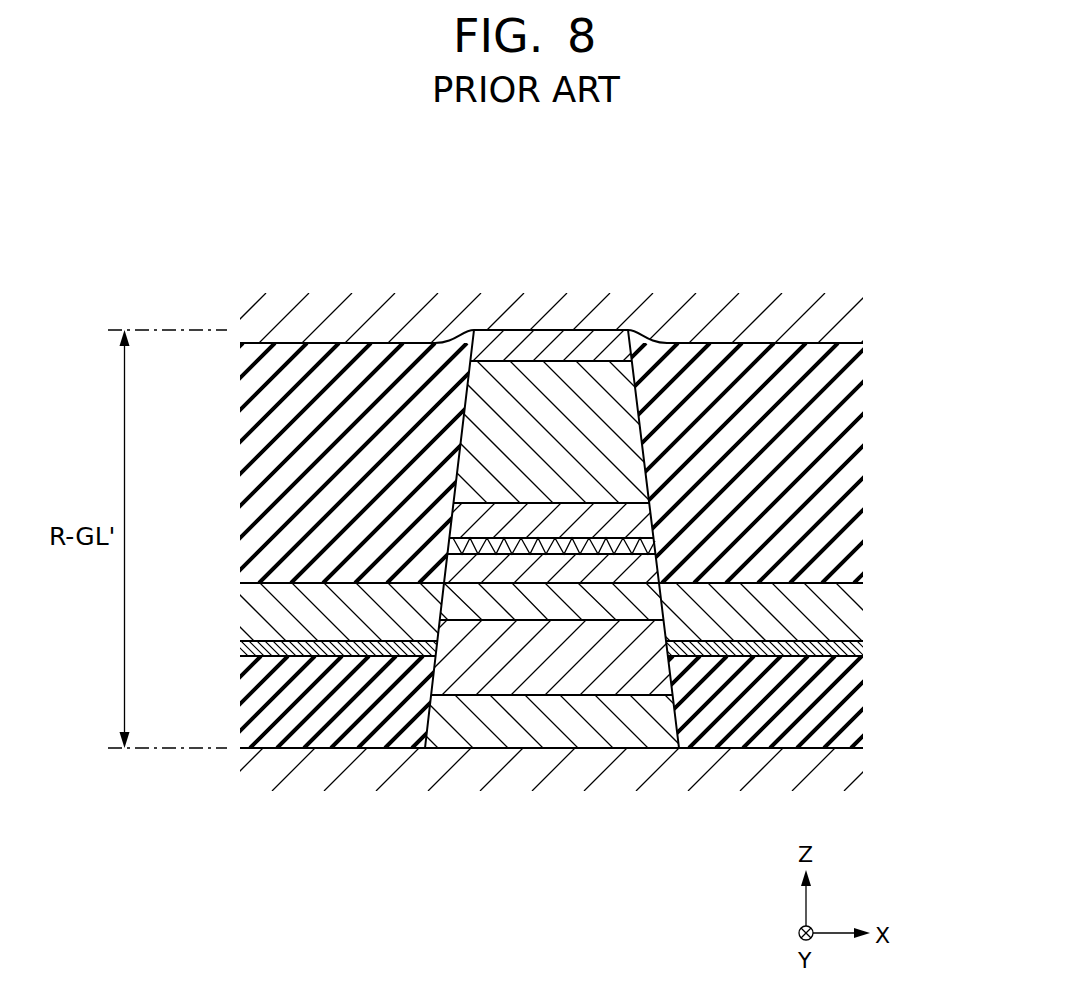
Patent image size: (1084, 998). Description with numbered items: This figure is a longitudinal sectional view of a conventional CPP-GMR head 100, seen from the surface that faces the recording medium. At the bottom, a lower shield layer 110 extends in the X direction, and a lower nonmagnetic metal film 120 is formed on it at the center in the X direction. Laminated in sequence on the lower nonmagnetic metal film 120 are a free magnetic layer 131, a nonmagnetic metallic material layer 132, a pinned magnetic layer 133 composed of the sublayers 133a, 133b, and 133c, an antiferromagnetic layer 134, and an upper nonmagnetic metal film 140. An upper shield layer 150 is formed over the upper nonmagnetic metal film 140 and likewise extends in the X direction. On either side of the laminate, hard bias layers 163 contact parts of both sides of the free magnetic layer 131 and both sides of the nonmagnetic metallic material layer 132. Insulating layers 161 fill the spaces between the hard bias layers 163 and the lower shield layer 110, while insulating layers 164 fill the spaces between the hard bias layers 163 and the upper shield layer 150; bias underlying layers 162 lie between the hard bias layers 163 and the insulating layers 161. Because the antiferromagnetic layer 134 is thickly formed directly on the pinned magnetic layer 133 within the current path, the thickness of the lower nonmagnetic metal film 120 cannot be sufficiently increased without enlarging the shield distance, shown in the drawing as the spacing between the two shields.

The CPP-GMR head 100 is at (786, 270).
The lower shield layer 110 is at (838, 770).
The lower nonmagnetic metal film 120 is at (645, 737).
The free magnetic layer 131 is at (578, 653).
The nonmagnetic metallic material layer 132 is at (507, 598).
The pinned magnetic layer 133 is at (598, 237).
The sublayer of pinned magnetic layer 133a is at (483, 563).
The sublayer of pinned magnetic layer 133b is at (538, 543).
The sublayer of pinned magnetic layer 133c is at (563, 517).
The antiferromagnetic layer 134 is at (578, 400).
The upper nonmagnetic metal film 140 is at (602, 343).
The upper shield layer 150 is at (832, 316).
The insulating layer 161 is at (254, 706).
The bias underlying layer 162 is at (257, 646).
The hard bias layer 163 is at (282, 615).
The insulating layer 164 is at (275, 497).